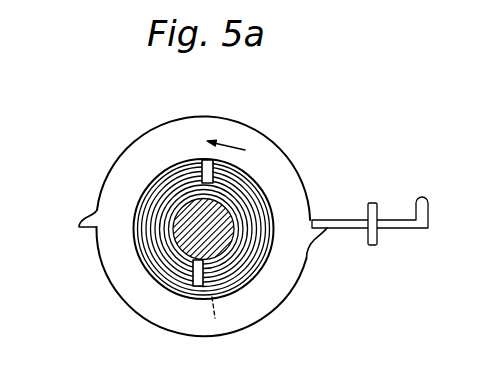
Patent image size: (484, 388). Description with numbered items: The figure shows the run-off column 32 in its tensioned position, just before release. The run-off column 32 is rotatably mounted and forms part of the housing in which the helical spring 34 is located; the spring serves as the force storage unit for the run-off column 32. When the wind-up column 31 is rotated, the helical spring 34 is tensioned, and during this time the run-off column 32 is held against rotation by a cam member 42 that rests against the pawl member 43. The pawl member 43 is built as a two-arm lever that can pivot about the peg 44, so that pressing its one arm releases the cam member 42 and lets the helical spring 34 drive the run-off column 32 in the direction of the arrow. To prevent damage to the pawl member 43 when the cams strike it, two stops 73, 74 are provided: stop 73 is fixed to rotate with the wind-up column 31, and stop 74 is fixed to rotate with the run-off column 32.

The wind-up column 31 is at (214, 242).
The run-off column 32 is at (112, 185).
The helical spring 34 is at (244, 190).
The cam member 42 is at (79, 227).
The pawl member 43 is at (342, 225).
The peg 44 is at (377, 214).
The stop 73 is at (191, 279).
The stop 74 is at (206, 169).